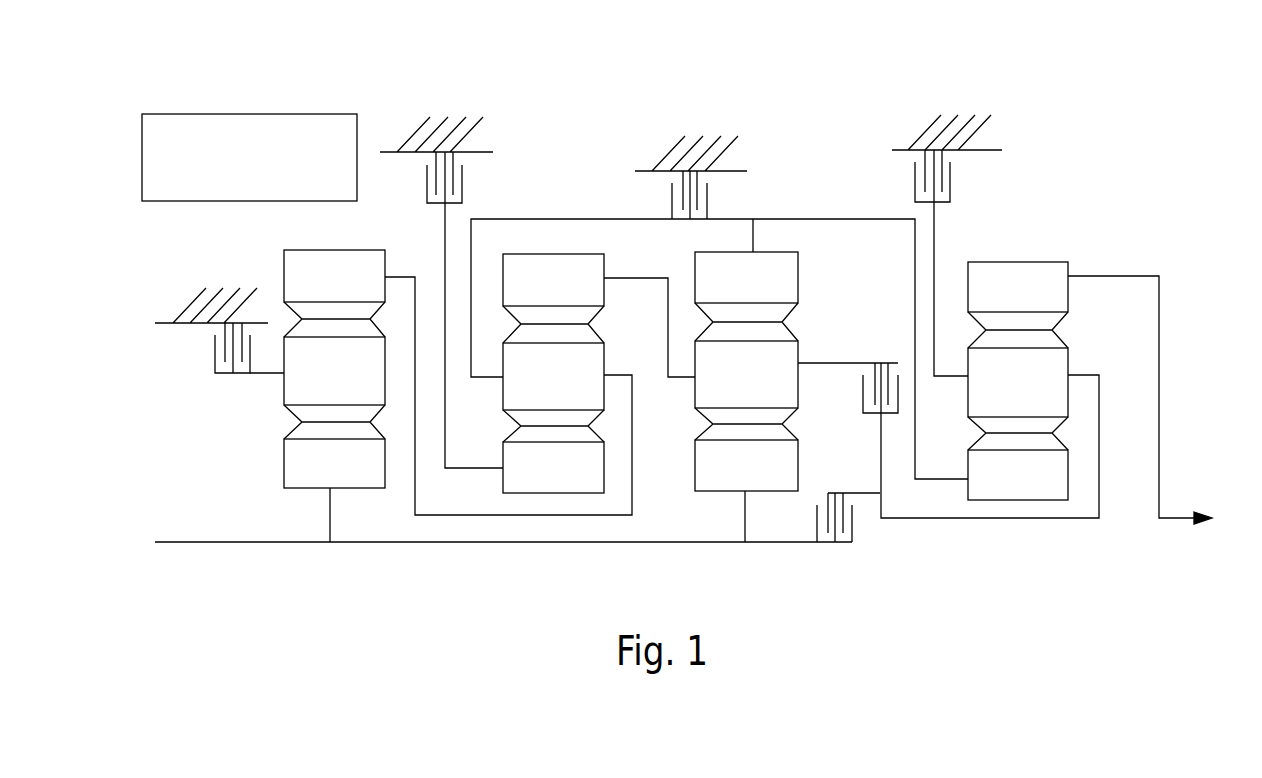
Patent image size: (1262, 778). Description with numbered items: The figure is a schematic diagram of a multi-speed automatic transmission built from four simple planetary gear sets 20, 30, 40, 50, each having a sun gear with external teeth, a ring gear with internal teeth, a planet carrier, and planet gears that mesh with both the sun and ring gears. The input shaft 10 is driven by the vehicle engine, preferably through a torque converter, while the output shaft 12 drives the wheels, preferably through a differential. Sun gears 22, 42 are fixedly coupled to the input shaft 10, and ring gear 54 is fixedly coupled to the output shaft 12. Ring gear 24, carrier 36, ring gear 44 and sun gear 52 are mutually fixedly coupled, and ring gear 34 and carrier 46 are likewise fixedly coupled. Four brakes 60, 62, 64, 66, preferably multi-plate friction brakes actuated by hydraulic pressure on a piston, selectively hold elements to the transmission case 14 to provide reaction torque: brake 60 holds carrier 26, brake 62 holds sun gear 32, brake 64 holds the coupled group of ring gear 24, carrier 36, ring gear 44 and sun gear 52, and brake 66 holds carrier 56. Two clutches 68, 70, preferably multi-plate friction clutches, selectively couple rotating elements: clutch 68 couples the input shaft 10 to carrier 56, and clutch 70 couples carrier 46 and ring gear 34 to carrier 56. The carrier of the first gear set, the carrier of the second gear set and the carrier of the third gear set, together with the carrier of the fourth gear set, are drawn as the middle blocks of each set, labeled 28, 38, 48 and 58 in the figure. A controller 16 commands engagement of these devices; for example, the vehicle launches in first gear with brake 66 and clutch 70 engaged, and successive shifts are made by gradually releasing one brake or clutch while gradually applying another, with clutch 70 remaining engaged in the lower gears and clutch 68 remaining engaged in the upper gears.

The input shaft 10 is at (233, 542).
The output shaft 12 is at (1178, 518).
The transmission case 14 is at (410, 138).
The controller 16 is at (237, 113).
The first planetary gear set 20 is at (334, 419).
The sun gear 22 is at (322, 475).
The ring gear 24 is at (334, 276).
The carrier 26 is at (267, 377).
The first carrier 28 is at (322, 384).
The second planetary gear set 30 is at (553, 421).
The sun gear 32 is at (553, 467).
The ring gear 34 is at (540, 295).
The carrier 36 is at (617, 372).
The second carrier 38 is at (553, 376).
The third planetary gear set 40 is at (746, 421).
The sun gear 42 is at (746, 465).
The ring gear 44 is at (746, 277).
The carrier 46 is at (813, 362).
The third carrier 48 is at (735, 384).
The fourth planetary gear set 50 is at (1018, 425).
The sun gear 52 is at (1005, 487).
The ring gear 54 is at (1004, 297).
The carrier 56 is at (1085, 372).
The fourth carrier 58 is at (1018, 382).
The brake 60 is at (212, 355).
The brake 62 is at (458, 187).
The brake 64 is at (708, 198).
The brake 66 is at (953, 187).
The clutch 68 is at (853, 542).
The clutch 70 is at (857, 390).